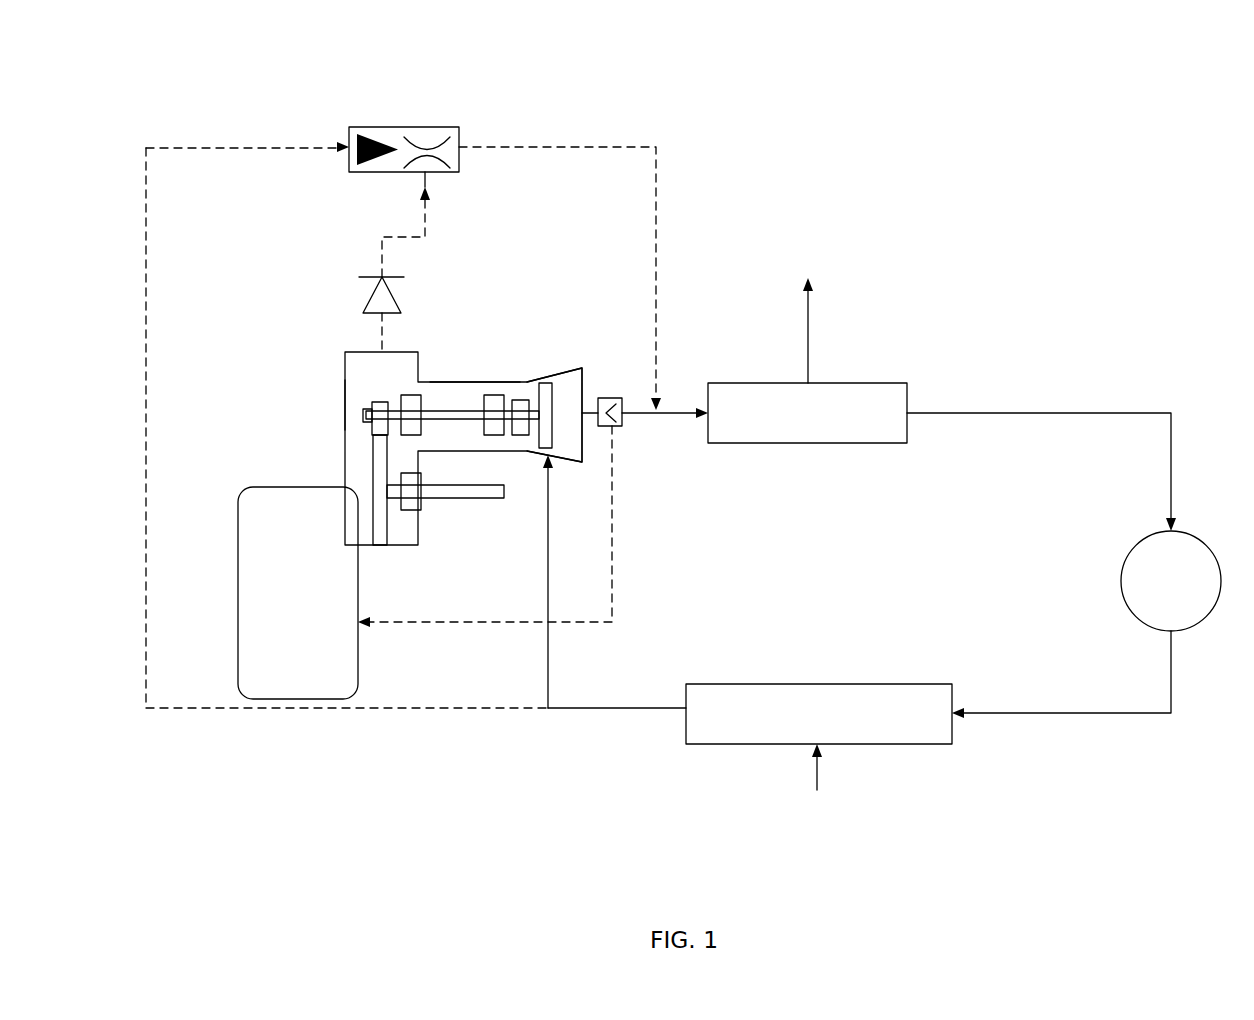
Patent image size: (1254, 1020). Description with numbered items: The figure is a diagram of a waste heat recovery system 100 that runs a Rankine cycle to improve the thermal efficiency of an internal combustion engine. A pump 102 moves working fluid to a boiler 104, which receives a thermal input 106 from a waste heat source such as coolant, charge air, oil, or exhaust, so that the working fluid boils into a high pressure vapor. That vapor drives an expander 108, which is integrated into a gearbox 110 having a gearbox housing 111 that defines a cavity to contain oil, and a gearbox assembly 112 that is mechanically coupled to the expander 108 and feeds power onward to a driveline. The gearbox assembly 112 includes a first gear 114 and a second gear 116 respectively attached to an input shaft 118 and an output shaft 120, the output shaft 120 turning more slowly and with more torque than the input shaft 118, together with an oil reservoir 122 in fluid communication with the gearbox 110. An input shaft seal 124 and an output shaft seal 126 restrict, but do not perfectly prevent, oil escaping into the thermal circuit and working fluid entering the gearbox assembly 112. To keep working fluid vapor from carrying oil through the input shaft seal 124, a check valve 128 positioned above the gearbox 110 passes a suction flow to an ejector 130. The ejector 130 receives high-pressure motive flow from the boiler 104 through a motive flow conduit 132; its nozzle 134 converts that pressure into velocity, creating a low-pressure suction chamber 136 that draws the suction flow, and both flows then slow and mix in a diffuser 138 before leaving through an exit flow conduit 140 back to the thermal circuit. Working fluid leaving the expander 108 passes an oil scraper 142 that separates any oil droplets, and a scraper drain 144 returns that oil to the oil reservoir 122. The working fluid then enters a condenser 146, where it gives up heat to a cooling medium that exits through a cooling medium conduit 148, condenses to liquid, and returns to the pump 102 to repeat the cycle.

The waste heat recovery system 100 is at (146, 89).
The pump 102 is at (1123, 582).
The boiler 104 is at (953, 738).
The thermal input 106 is at (817, 773).
The expander 108 is at (563, 360).
The gearbox 110 is at (346, 345).
The gearbox housing 111 is at (478, 383).
The gearbox assembly 112 is at (348, 388).
The first gear 114 is at (370, 410).
The second gear 116 is at (376, 547).
The input shaft 118 is at (447, 426).
The output shaft 120 is at (474, 500).
The oil reservoir 122 is at (240, 523).
The input shaft seal 124 is at (513, 400).
The output shaft seal 126 is at (422, 499).
The check valve 128 is at (365, 300).
The ejector 130 is at (413, 163).
The motive flow conduit 132 is at (146, 192).
The nozzle 134 is at (362, 133).
The suction chamber 136 is at (399, 162).
The diffuser 138 is at (447, 140).
The exit flow conduit 140 is at (630, 145).
The oil scraper 142 is at (623, 423).
The scraper drain 144 is at (613, 592).
The condenser 146 is at (907, 431).
The cooling medium conduit 148 is at (807, 332).